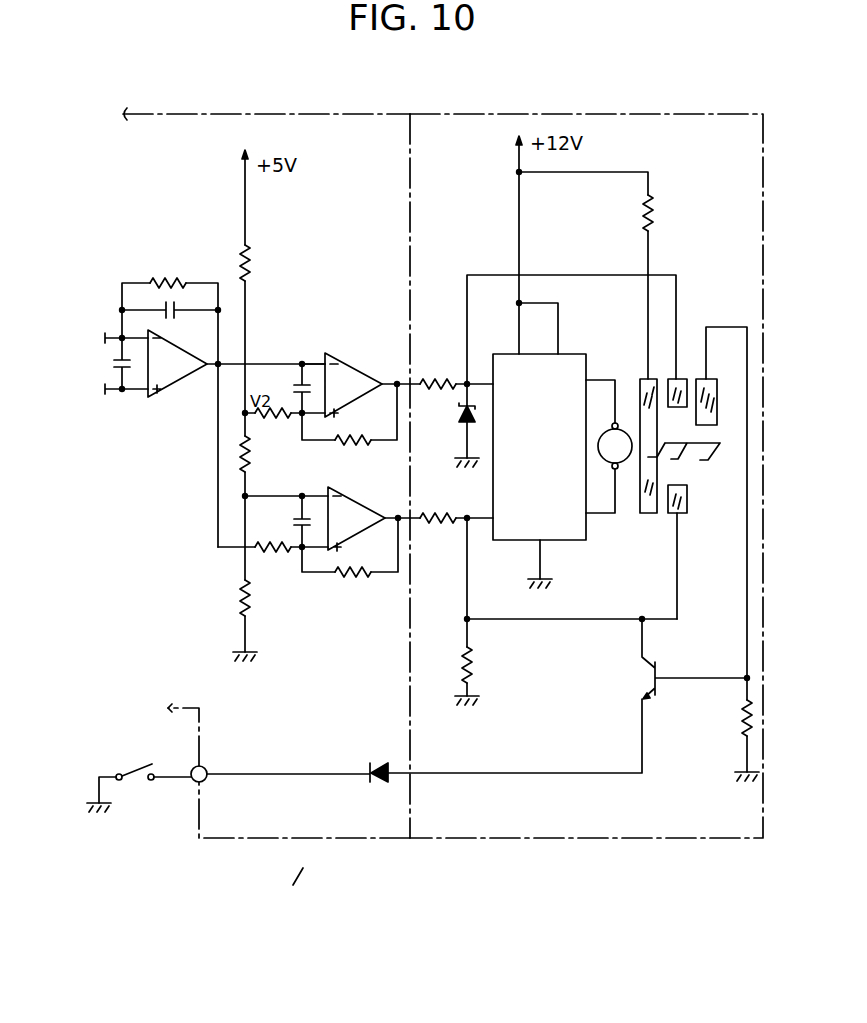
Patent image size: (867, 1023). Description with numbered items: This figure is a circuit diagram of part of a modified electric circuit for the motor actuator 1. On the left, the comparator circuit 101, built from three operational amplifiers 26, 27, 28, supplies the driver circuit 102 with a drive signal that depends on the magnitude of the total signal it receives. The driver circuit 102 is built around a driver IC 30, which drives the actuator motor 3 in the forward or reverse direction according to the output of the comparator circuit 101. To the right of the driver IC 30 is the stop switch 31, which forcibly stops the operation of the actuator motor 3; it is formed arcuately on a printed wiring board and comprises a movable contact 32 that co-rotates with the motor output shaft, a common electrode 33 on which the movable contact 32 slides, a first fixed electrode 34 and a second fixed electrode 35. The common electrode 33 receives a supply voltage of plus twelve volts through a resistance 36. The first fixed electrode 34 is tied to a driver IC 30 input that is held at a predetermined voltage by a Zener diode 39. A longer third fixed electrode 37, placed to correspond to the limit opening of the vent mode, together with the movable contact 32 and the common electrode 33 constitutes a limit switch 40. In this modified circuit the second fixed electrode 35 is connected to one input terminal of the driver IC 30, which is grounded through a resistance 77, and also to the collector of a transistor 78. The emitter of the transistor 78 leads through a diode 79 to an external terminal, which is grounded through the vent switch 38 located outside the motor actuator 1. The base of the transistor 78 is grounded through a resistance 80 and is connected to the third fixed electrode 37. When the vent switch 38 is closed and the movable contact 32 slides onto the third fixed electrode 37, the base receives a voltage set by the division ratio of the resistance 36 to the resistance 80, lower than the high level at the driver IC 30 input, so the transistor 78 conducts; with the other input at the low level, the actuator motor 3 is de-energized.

The motor actuator 1 is at (497, 840).
The comparator circuit 101 is at (305, 113).
The driver circuit 102 is at (617, 113).
The operational amplifier 26 is at (173, 380).
The operational amplifier 27 is at (343, 366).
The operational amplifier 28 is at (343, 501).
The Zener diode 39 is at (461, 418).
The driver IC 30 is at (578, 537).
The actuator motor 3 is at (611, 425).
The stop switch 31 is at (676, 474).
The movable contact 32 is at (686, 448).
The common electrode 33 is at (648, 515).
The first fixed electrode 34 is at (684, 378).
The second fixed electrode 35 is at (684, 515).
The resistance 36 is at (653, 221).
The third fixed electrode 37 is at (697, 378).
The limit switch 40 is at (717, 392).
The resistance 77 is at (472, 666).
The transistor 78 is at (652, 691).
The diode 79 is at (380, 766).
The resistance 80 is at (741, 706).
The vent switch 38 is at (137, 772).